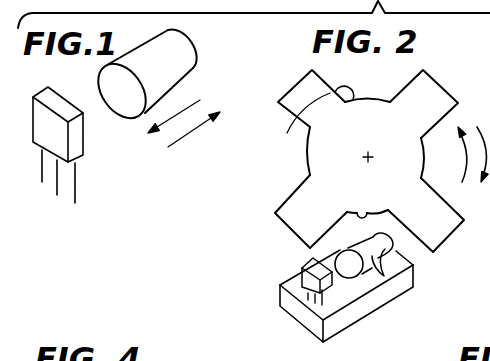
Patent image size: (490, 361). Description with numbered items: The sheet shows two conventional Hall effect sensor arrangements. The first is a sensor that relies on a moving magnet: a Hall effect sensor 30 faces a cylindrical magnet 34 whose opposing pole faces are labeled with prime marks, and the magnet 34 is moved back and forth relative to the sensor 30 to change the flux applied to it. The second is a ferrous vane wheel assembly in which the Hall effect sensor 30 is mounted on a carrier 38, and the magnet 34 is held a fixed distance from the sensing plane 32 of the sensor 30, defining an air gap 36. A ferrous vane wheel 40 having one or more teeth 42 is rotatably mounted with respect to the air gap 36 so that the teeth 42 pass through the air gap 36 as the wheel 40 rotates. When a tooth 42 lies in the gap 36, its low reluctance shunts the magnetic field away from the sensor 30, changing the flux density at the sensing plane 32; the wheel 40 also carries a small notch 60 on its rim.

In FIG. 1, the Hall effect sensor 30 is at (92, 141).
In FIG. 2, the Hall effect sensor 30 is at (298, 263).
In FIG. 2, the sensing plane 32 is at (290, 291).
In FIG. 1, the magnet 34 is at (183, 69).
In FIG. 2, the magnet 34 is at (393, 247).
In FIG. 2, the air gap 36 is at (340, 280).
In FIG. 2, the carrier 38 is at (331, 329).
In FIG. 2, the ferrous vane wheel 40 is at (278, 232).
In FIG. 2, the tooth 42 is at (414, 86).
In FIG. 2, the detent notch 60 is at (356, 213).